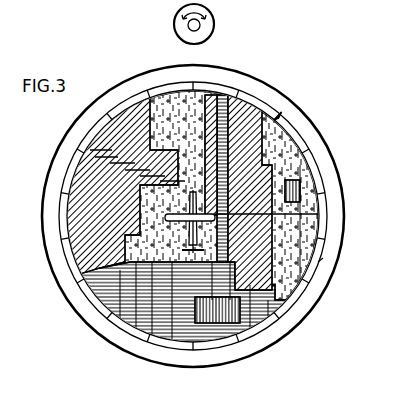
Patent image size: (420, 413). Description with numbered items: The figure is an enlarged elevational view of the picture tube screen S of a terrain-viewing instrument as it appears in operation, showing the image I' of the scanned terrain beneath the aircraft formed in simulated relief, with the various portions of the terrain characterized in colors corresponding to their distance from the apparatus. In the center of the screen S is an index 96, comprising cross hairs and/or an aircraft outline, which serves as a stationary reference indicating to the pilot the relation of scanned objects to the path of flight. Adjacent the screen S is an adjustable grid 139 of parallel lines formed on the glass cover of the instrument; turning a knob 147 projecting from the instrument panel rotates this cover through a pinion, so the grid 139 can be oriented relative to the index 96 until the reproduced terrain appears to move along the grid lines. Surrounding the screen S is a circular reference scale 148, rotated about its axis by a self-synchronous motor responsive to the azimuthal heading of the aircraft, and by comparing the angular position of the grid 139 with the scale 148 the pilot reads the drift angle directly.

The circular reference scale 148 is at (156, 70).
The knob 147 is at (213, 32).
The grid of parallel lines 139 is at (313, 191).
The index 96 is at (305, 214).
The image I' is at (305, 112).
The screen S is at (323, 262).